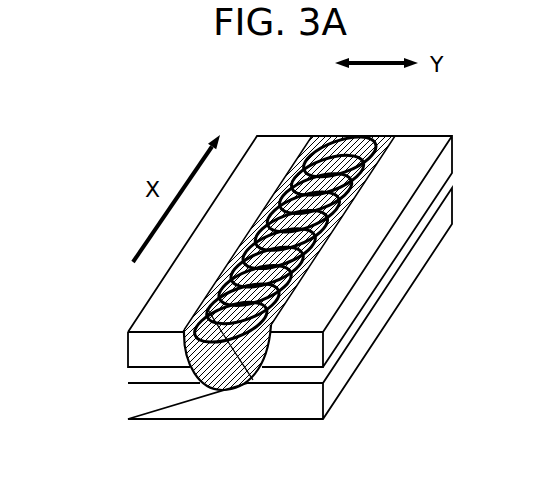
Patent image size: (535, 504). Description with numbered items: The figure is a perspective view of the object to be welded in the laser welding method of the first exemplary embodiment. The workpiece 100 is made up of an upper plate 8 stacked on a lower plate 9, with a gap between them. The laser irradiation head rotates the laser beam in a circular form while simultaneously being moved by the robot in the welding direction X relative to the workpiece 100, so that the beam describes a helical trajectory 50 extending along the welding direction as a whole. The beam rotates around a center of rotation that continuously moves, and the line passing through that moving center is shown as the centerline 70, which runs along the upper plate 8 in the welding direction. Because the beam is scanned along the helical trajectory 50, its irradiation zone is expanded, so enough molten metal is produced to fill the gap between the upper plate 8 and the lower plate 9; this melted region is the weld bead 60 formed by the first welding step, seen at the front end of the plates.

The workpiece 100 is at (98, 285).
The upper plate 8 is at (162, 307).
The lower plate 9 is at (162, 405).
The centerline 70 is at (289, 238).
The trajectory 50 is at (192, 372).
The weld bead 60 is at (252, 382).